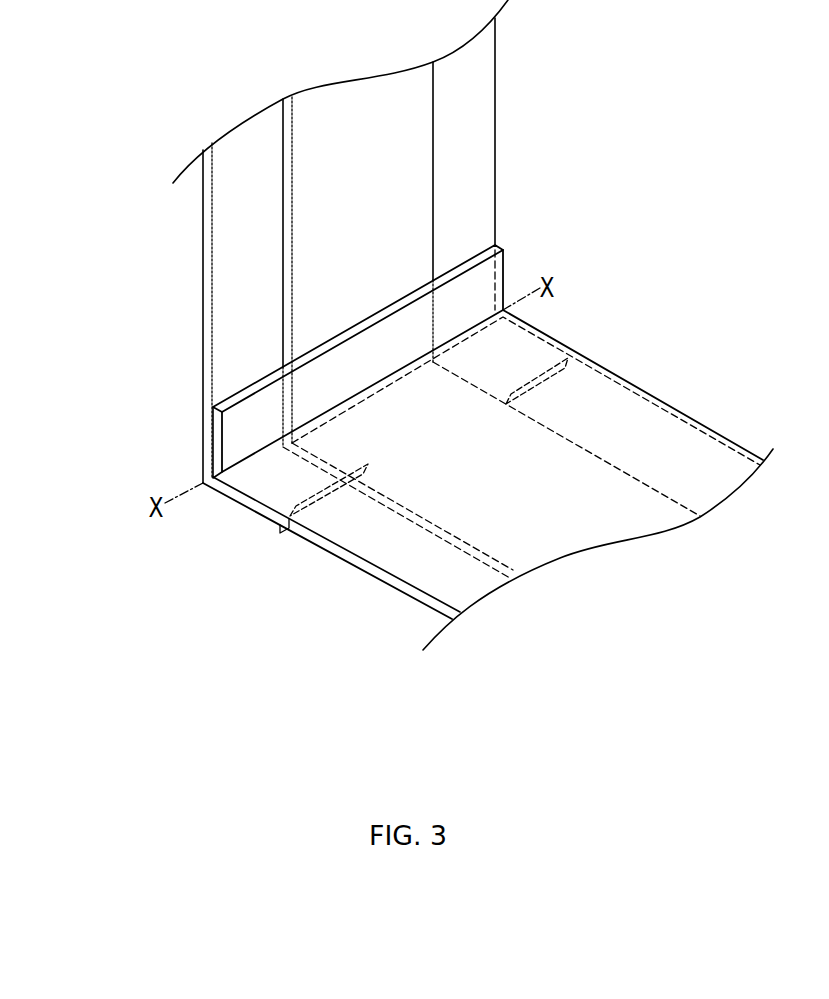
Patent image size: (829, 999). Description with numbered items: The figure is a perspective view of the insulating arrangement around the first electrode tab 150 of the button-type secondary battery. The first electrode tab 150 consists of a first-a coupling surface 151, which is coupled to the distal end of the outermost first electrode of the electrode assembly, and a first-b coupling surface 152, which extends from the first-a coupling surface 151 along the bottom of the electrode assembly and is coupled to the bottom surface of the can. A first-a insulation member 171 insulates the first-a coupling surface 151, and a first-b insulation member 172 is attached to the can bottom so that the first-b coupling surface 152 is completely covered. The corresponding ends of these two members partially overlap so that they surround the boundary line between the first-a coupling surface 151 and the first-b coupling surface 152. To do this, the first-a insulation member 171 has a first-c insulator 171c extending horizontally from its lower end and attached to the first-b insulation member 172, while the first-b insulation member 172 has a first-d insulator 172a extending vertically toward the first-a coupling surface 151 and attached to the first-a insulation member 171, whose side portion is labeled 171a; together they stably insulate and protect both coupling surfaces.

The first electrode tab 150 is at (605, 200).
The first-a coupling surface 151 is at (433, 207).
The first-b coupling surface 152 is at (481, 388).
The first-a insulation member 171 is at (102, 330).
The side frame of wall panel 171a is at (202, 327).
The first-c insulator 171c is at (238, 498).
The first-b insulation member 172 is at (378, 574).
The first-d insulator 172a is at (258, 427).